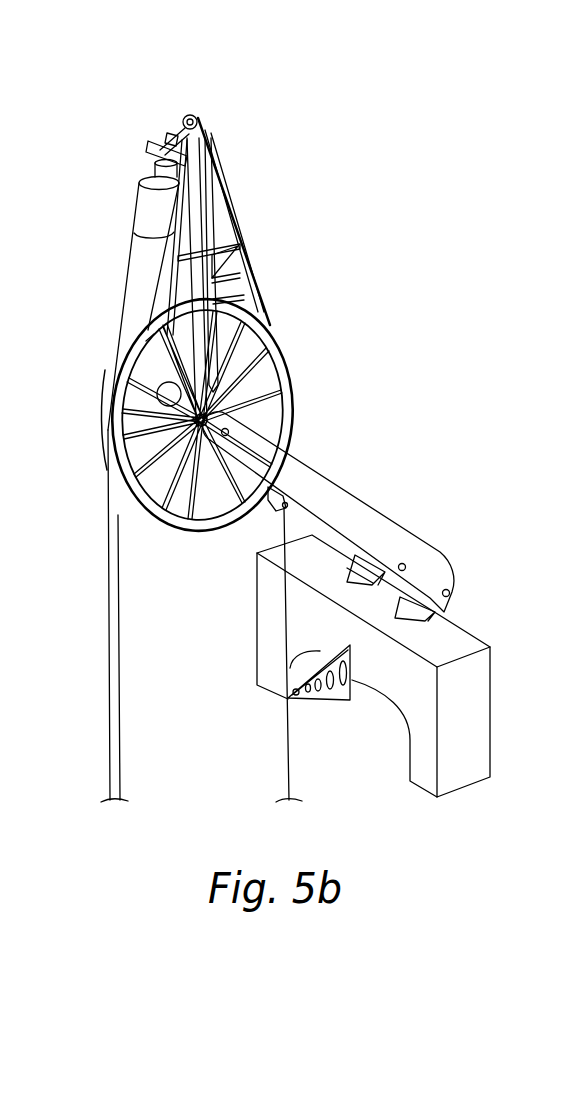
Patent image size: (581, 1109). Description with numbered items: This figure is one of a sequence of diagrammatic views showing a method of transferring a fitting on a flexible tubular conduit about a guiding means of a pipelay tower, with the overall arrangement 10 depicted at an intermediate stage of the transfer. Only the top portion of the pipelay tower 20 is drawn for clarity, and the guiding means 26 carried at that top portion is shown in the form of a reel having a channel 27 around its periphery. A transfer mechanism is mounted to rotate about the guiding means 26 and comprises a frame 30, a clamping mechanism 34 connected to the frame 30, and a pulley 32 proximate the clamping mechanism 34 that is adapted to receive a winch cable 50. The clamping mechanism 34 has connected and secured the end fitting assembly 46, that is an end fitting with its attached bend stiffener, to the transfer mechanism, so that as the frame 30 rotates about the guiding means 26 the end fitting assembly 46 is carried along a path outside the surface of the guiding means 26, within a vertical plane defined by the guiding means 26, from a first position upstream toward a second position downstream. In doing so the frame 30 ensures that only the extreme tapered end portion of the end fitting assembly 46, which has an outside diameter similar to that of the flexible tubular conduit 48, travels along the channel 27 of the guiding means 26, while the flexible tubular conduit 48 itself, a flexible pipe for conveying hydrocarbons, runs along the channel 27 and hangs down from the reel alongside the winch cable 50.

The apparatus 10 is at (7, 748).
The pipelay tower 20 is at (472, 735).
The guiding means 26 is at (291, 397).
The channel 27 is at (153, 333).
The frame 30 is at (238, 225).
The pulley 32 is at (191, 118).
The clamping mechanism 34 is at (160, 150).
The end fitting assembly 46 is at (133, 297).
The flexible tubular conduit 48 is at (108, 572).
The winch cable 50 is at (252, 285).